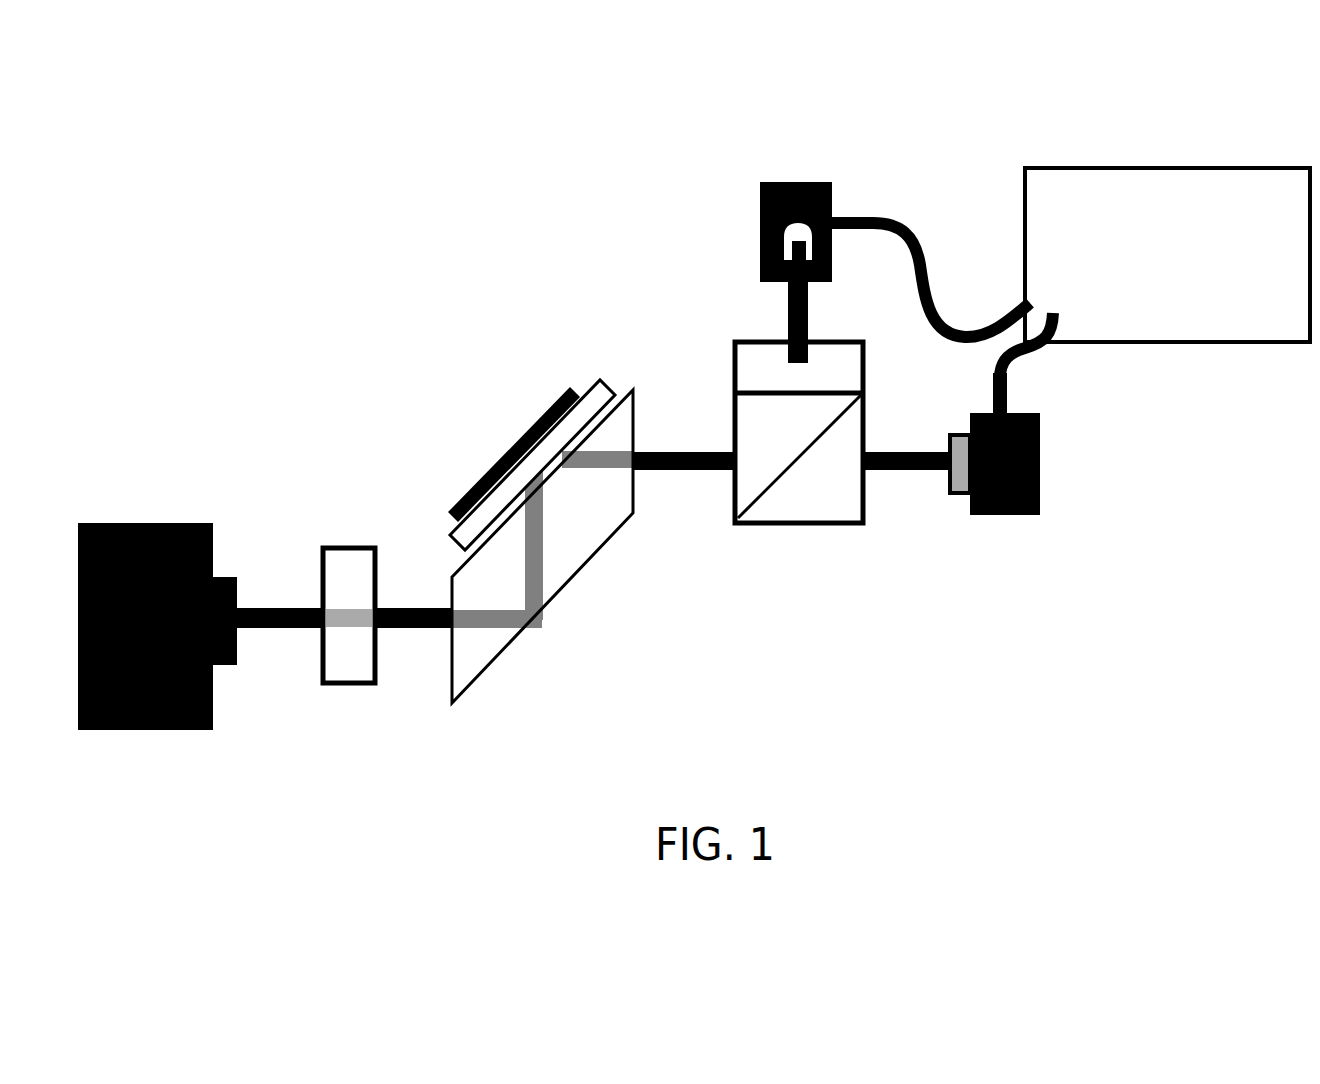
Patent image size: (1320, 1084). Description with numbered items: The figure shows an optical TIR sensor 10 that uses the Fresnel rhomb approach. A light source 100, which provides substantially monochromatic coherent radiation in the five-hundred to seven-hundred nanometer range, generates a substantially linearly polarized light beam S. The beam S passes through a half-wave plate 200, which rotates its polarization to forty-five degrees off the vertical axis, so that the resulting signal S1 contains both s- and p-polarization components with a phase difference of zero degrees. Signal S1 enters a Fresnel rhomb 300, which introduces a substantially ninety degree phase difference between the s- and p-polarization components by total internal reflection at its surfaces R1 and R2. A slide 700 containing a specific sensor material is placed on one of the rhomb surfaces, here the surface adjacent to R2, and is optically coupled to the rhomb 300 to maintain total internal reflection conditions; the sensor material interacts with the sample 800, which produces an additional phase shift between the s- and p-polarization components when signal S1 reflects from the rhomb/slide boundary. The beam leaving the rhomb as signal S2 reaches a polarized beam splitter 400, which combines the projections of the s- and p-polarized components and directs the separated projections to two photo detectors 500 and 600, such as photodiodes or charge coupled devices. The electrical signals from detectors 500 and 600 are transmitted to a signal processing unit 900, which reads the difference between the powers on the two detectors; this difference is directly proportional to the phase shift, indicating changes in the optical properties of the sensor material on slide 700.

The optical TIR sensor 10 is at (243, 339).
The light source 100 is at (157, 595).
The half-wave plate 200 is at (350, 645).
The Fresnel rhomb 300 is at (549, 546).
The polarized beam splitter 400 is at (799, 462).
The photo detector 500 is at (756, 272).
The photo detector 600 is at (1001, 480).
The slide containing sensor material 700 is at (441, 512).
The sample 800 is at (537, 378).
The signal processing unit 900 is at (1205, 344).
The light beam S is at (289, 656).
The signal S1 is at (413, 657).
The signal S2 is at (681, 502).
The Fresnel rhomb surface R1 is at (504, 683).
The Fresnel rhomb surface R2 is at (634, 372).